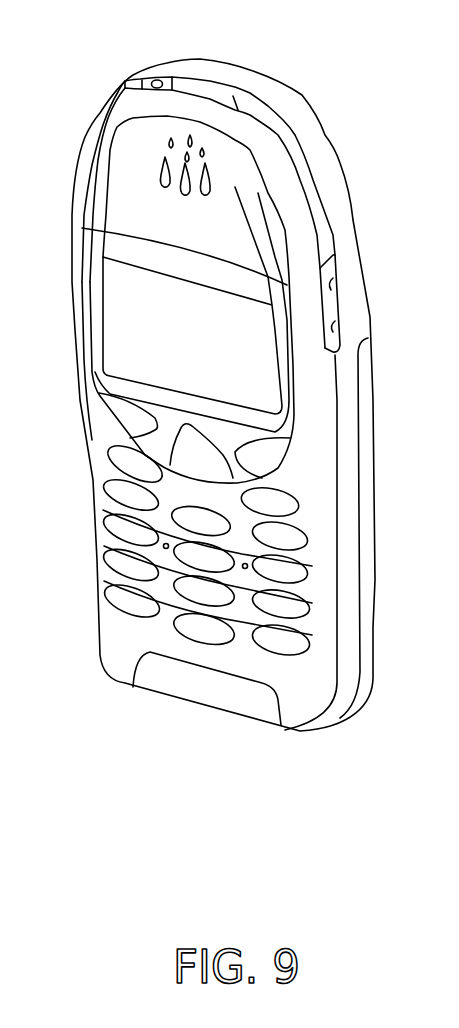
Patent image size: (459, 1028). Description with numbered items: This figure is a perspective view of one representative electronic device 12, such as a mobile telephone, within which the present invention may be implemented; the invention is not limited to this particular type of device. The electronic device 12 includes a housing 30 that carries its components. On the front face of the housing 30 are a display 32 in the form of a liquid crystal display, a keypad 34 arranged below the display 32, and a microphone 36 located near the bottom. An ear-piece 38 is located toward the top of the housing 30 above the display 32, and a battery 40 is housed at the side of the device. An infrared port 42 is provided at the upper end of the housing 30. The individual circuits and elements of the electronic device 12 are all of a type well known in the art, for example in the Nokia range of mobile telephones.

The electronic device 12 is at (237, 402).
The housing 30 is at (345, 196).
The display 32 is at (258, 370).
The keypad 34 is at (280, 644).
The microphone 36 is at (157, 680).
The ear-piece 38 is at (170, 163).
The battery 40 is at (368, 627).
The infrared port 42 is at (205, 90).